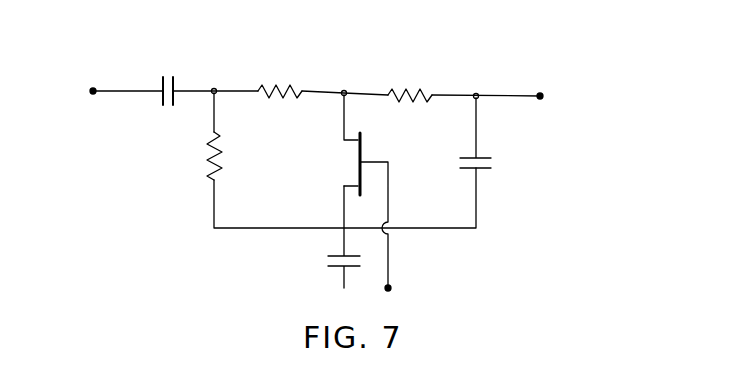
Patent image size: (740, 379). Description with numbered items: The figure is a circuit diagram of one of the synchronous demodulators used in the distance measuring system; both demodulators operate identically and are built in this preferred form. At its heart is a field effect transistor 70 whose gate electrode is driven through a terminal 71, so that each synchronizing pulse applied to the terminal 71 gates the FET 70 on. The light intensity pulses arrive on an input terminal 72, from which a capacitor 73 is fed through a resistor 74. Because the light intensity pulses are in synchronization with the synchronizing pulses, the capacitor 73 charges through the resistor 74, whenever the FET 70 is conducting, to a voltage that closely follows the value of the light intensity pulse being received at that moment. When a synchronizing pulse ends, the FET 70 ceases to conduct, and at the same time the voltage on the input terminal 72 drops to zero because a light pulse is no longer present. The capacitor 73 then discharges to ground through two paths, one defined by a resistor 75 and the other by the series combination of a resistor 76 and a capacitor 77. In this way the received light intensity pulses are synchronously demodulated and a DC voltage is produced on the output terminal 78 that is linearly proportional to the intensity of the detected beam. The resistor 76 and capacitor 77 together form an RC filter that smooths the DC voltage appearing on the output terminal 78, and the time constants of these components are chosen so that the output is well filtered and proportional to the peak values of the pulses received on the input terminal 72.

The field effect transistor 70 is at (334, 164).
The terminal 71 is at (392, 290).
The input terminal 72 is at (92, 88).
The capacitor 73 is at (174, 77).
The resistor 74 is at (290, 87).
The resistor 75 is at (206, 160).
The resistor 76 is at (421, 91).
The capacitor 77 is at (493, 159).
The output terminal 78 is at (541, 93).